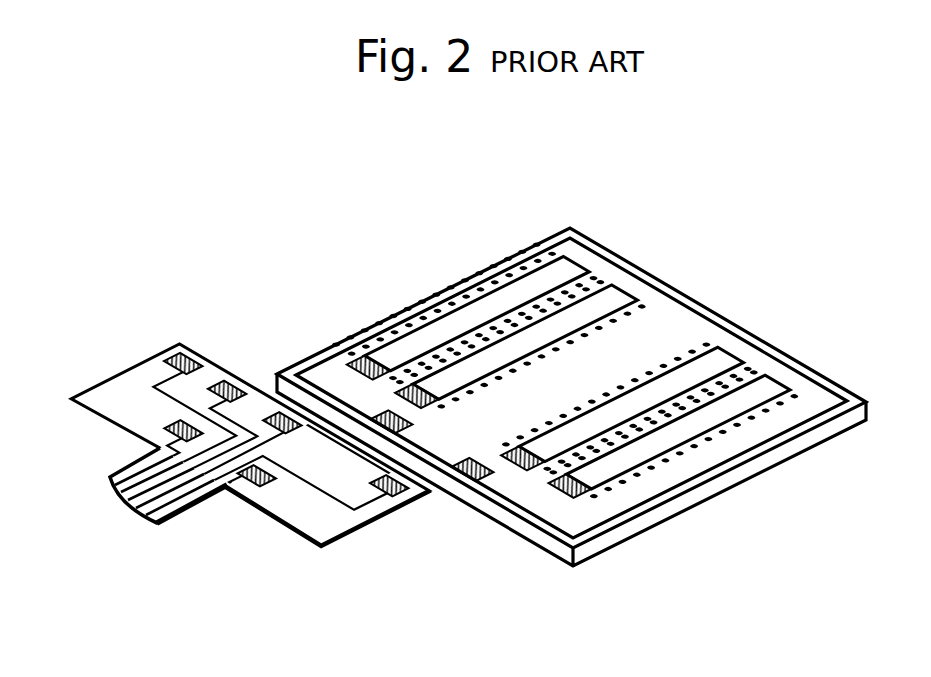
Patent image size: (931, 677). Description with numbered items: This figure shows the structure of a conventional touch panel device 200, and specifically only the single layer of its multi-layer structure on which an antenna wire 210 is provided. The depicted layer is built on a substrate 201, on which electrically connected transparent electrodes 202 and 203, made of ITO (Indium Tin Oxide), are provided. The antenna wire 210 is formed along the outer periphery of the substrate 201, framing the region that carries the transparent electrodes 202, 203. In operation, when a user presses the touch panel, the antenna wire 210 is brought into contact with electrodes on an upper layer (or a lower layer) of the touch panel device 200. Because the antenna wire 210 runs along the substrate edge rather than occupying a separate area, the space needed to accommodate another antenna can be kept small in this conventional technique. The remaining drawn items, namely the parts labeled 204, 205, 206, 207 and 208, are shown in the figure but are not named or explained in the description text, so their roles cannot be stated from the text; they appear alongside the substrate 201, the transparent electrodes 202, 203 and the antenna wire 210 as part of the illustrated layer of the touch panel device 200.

The touch panel device 200 is at (218, 236).
The substrate 201 is at (683, 507).
The transparent electrode 202 is at (720, 357).
The transparent electrode 203 is at (558, 492).
The connection terminal 204 is at (455, 472).
The electrode bumps 205 is at (736, 432).
The flexible printed circuit 206 is at (122, 398).
The connection pad 207 is at (388, 490).
The terminal end 208 is at (198, 498).
The antenna wire 210 is at (684, 296).